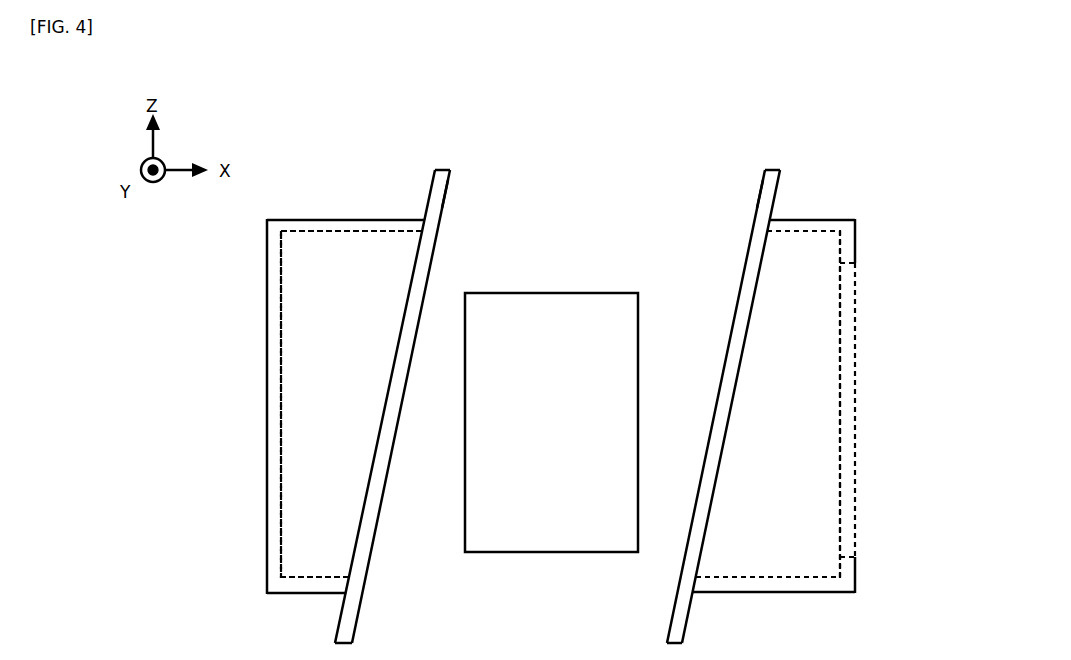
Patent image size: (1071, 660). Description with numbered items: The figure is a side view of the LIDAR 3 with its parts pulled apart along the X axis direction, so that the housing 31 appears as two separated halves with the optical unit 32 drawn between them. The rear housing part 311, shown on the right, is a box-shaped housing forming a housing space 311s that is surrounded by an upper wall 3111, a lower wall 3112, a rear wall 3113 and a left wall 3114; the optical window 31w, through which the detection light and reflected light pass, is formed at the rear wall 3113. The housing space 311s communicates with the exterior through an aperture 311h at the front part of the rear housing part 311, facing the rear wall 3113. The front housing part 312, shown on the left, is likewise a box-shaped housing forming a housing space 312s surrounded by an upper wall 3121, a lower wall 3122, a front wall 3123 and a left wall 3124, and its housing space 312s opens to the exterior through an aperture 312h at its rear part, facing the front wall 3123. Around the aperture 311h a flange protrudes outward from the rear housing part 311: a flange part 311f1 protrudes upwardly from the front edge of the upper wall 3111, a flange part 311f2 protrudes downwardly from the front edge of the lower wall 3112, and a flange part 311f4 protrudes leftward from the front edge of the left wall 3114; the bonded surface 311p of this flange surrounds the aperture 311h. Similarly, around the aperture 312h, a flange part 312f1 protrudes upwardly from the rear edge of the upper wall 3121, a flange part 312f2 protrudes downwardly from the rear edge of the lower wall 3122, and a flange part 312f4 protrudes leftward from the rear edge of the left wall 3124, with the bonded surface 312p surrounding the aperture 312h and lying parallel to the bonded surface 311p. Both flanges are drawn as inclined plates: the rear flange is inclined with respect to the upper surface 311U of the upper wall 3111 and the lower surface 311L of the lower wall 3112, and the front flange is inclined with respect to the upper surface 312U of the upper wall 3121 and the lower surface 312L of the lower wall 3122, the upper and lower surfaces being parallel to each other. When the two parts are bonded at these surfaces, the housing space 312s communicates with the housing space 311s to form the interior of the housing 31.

The LIDAR 3 is at (580, 102).
The housing 31 is at (385, 145).
The optical unit 32 is at (640, 383).
The rear housing part 311 is at (885, 327).
The front housing part 312 is at (226, 431).
The upper surface 311U is at (805, 218).
The lower surface 311L is at (775, 593).
The housing space 311s is at (828, 452).
The aperture 311h is at (733, 317).
The bonded surface 311p is at (755, 209).
The flange part 311f1 is at (769, 190).
The flange part 311f2 is at (678, 623).
The flange part 311f4 is at (712, 481).
The upper wall 3111 is at (825, 226).
The lower wall 3112 is at (825, 585).
The rear wall 3113 is at (847, 247).
The left wall 3114 is at (812, 487).
The optical window 31w is at (848, 518).
The upper surface 312U is at (375, 193).
The lower surface 312L is at (320, 593).
The housing space 312s is at (388, 367).
The aperture 312h is at (388, 473).
The bonded surface 312p is at (445, 203).
The flange part 312f1 is at (440, 194).
The flange part 312f2 is at (352, 622).
The flange part 312f4 is at (400, 378).
The upper wall 3121 is at (325, 230).
The lower wall 3122 is at (300, 587).
The front wall 3123 is at (272, 297).
The left wall 3124 is at (298, 267).